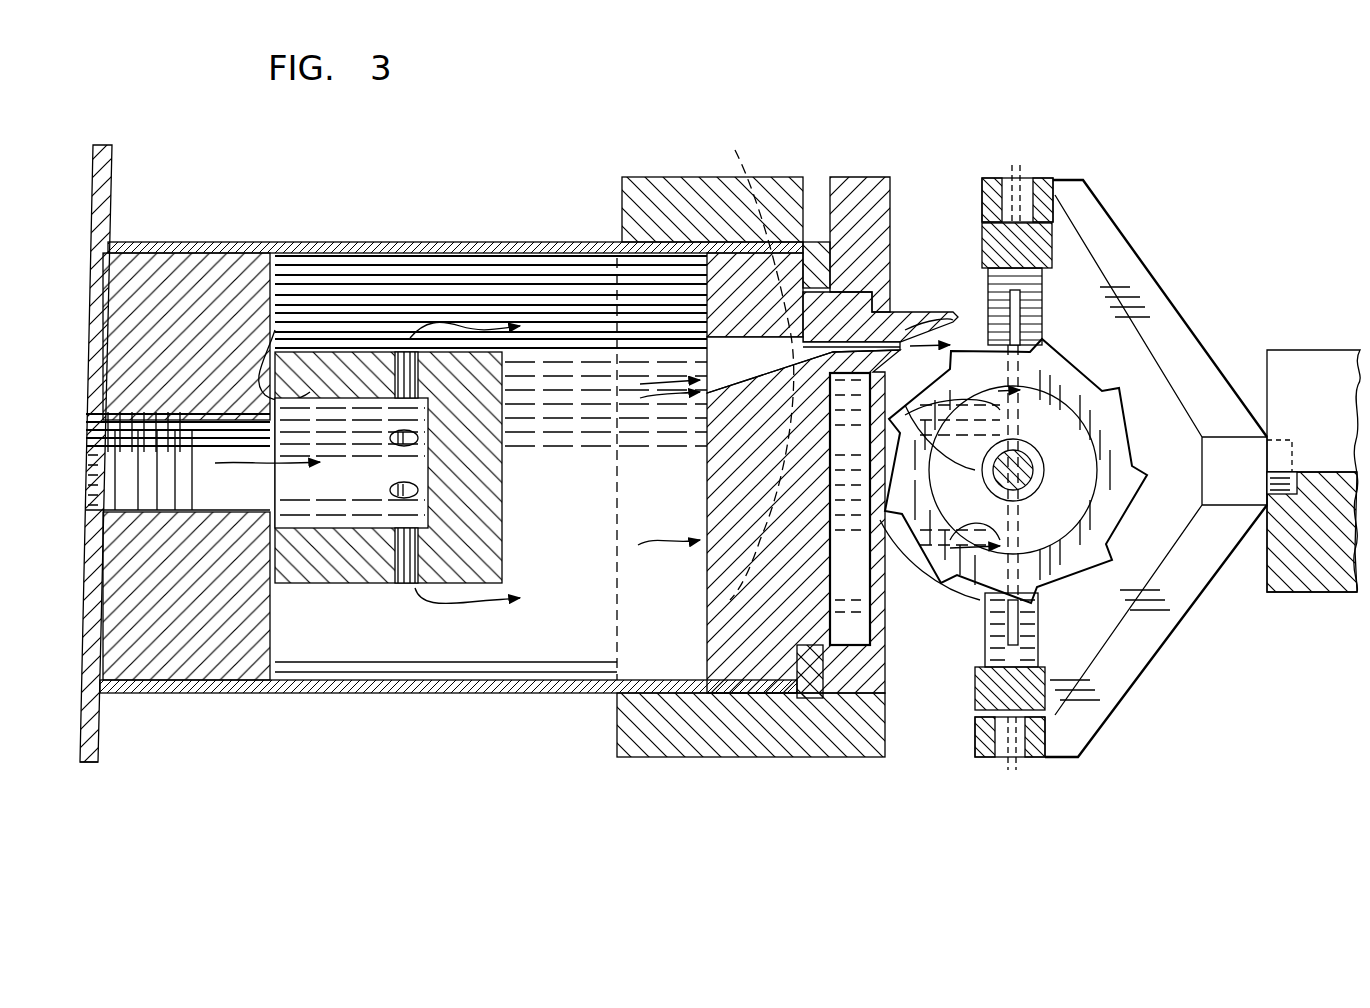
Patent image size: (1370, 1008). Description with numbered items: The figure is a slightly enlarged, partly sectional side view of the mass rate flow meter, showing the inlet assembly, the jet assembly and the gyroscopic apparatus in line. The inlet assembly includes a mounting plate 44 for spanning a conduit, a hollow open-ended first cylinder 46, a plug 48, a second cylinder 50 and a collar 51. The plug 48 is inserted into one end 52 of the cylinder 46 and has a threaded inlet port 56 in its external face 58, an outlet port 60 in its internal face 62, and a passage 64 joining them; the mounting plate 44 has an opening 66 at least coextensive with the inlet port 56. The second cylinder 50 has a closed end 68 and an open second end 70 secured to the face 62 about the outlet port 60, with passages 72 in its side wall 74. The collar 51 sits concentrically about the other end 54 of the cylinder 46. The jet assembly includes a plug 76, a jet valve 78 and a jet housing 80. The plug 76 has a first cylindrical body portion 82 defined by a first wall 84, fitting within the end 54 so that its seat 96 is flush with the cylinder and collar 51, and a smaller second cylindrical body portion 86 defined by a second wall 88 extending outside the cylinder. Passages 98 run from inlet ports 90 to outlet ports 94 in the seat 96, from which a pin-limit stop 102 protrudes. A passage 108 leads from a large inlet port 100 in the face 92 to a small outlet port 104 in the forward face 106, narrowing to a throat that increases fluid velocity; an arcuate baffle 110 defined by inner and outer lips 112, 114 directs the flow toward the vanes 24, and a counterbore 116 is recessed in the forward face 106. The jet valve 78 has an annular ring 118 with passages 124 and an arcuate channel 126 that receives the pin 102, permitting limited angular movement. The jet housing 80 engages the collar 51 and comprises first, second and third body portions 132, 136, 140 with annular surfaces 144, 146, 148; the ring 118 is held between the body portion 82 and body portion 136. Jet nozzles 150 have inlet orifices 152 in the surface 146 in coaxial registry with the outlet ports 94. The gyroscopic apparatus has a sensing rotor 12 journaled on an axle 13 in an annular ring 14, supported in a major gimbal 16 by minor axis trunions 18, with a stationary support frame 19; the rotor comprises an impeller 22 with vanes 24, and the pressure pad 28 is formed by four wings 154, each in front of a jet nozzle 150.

The sensing rotor 12 is at (1130, 540).
The axle 13 is at (1013, 470).
The annular ring 14 is at (1045, 245).
The major gimbal 16 is at (1180, 330).
The minor axis trunions 18 is at (1020, 172).
The stationary support frame 19 is at (1305, 355).
The impeller 22 is at (1044, 472).
The vanes 24 is at (1140, 445).
The pressure pad 28 is at (1040, 650).
The mounting plate 44 is at (98, 745).
The first cylinder 46 is at (390, 693).
The plug 48 is at (186, 466).
The second cylinder 50 is at (388, 467).
The collar 51 is at (751, 725).
The one end of the cylinder 52 is at (112, 200).
The other end of the cylinder 54 is at (808, 245).
The threaded inlet port 56 is at (95, 430).
The face 58 is at (120, 247).
The outlet port 60 is at (275, 340).
The face 62 is at (278, 281).
The passage 64 is at (178, 470).
The opening 66 is at (92, 477).
The closed end 68 is at (495, 375).
The open second end 70 is at (265, 600).
The passages 72 is at (420, 375).
The side wall 74 is at (350, 583).
The plug 76 is at (755, 295).
The jet valve 78 is at (890, 185).
The jet housing 80 is at (857, 762).
The first cylindrical body portion 82 is at (803, 521).
The first wall 84 is at (720, 757).
The second cylindrical body portion 86 is at (850, 633).
The second wall 88 is at (860, 660).
The inlet ports 90 is at (707, 572).
The face 92 is at (707, 622).
The outlet ports 94 is at (760, 455).
The seat 96 is at (830, 220).
The passages 98 is at (760, 500).
The inlet port 100 is at (707, 350).
The pin-limit stop 102 is at (707, 405).
The outlet port 104 is at (885, 320).
The forward face 106 is at (872, 305).
The passage 108 is at (803, 365).
The baffle 110 is at (975, 288).
The inner lip 112 is at (880, 350).
The outer lip 114 is at (940, 322).
The counterbore 116 is at (870, 600).
The annular ring 118 is at (880, 245).
The passages 124 is at (758, 369).
The arcuate channel 126 is at (640, 436).
The first body portion 132 is at (870, 625).
The second body portion 136 is at (825, 695).
The third body portion 140 is at (840, 760).
The first annular surface 144 is at (885, 658).
The second annular surface 146 is at (870, 735).
The third annular surface 148 is at (775, 757).
The jet nozzles 150 is at (925, 425).
The inlet orifice 152 is at (735, 150).
The wings 154 is at (740, 412).